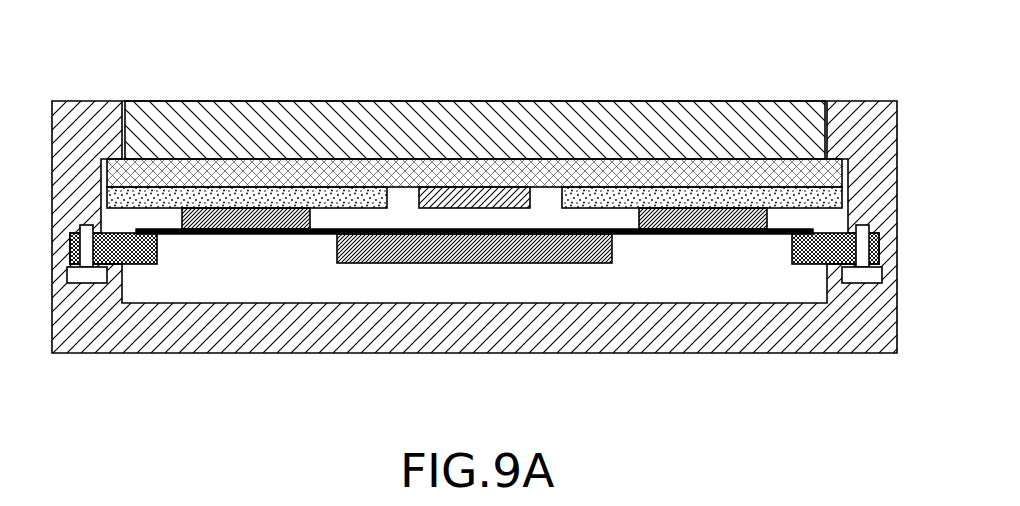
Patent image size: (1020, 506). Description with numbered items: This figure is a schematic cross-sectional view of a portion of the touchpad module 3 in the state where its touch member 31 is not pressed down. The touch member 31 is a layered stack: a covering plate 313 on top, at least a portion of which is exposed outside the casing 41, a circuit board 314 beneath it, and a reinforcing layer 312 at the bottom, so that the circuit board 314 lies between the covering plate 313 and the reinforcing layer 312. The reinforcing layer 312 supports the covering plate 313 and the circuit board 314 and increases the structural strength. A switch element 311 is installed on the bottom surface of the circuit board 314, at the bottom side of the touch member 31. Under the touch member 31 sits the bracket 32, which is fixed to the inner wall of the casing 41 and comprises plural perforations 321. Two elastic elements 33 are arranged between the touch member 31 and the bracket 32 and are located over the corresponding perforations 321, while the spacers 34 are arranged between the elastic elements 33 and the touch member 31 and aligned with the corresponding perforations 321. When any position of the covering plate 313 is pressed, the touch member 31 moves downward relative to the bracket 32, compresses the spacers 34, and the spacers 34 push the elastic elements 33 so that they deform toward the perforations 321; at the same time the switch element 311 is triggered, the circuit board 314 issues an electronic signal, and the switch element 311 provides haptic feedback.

The touchpad module 3 is at (703, 13).
The touch member 31 is at (496, 125).
The switch element 311 is at (473, 190).
The reinforcing layer 312 is at (708, 198).
The covering plate 313 is at (545, 116).
The circuit board 314 is at (620, 172).
The bracket 32 is at (383, 253).
The perforations 321 is at (302, 250).
The elastic elements 33 is at (245, 230).
The spacers 34 is at (248, 207).
The casing 41 is at (643, 330).